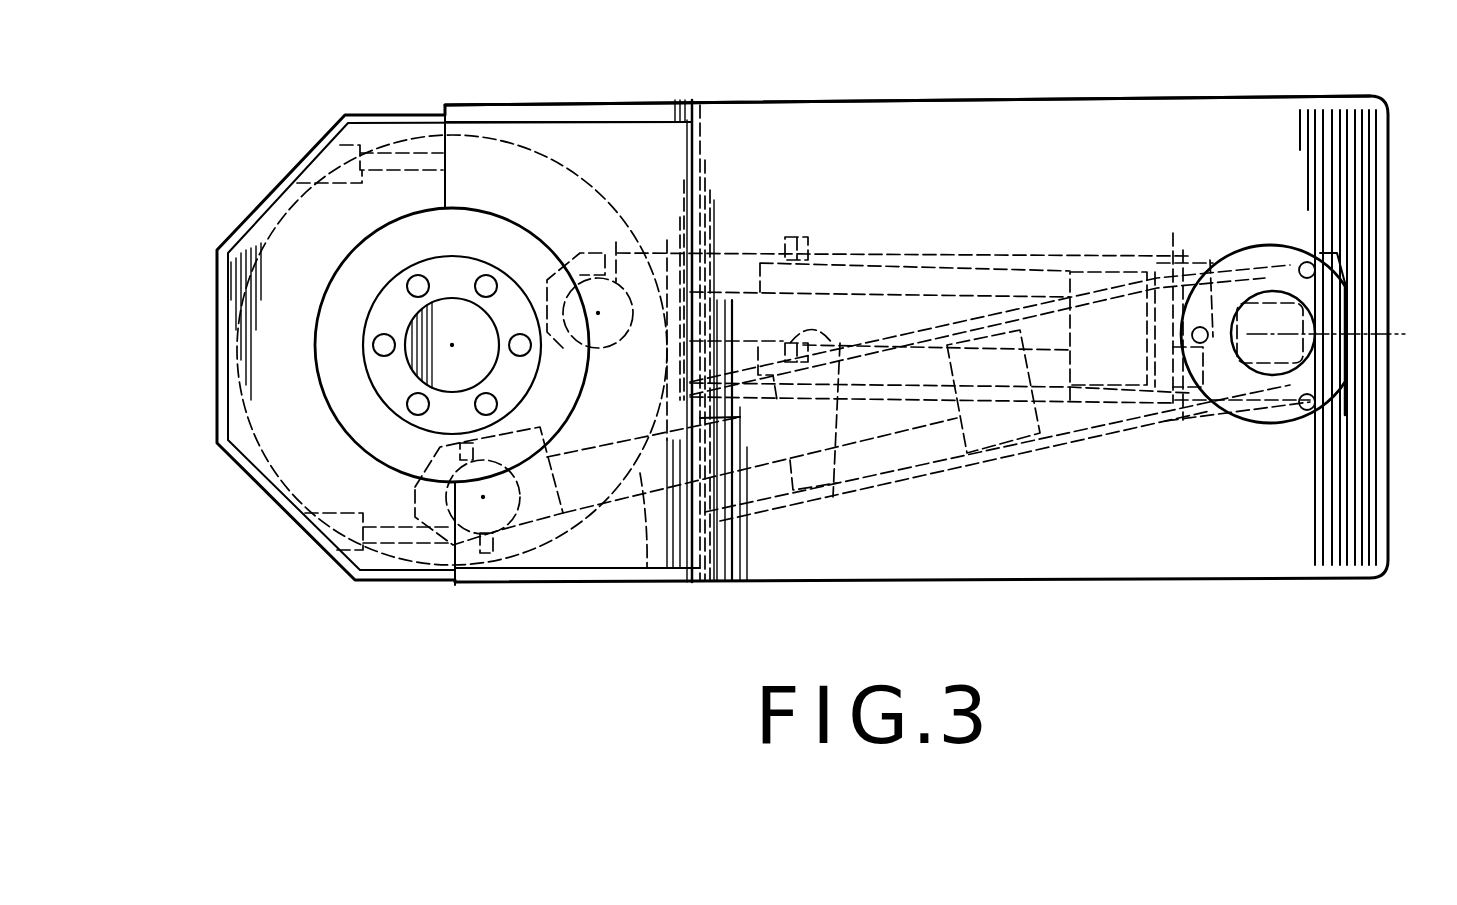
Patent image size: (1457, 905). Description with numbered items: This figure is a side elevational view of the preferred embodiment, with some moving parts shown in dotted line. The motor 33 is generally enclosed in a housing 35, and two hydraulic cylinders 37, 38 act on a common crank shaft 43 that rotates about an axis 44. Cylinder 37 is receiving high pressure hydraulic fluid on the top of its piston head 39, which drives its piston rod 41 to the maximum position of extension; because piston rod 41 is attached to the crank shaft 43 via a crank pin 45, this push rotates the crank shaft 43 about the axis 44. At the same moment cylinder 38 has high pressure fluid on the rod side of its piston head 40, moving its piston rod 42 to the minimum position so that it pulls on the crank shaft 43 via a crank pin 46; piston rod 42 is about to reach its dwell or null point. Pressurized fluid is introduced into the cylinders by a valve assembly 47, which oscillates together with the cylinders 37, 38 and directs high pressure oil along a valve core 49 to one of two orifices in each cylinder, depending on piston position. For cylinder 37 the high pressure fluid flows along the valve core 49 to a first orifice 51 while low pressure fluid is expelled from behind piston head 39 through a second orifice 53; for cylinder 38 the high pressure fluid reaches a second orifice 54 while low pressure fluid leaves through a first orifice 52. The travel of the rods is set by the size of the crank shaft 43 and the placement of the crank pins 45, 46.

The motor 33 is at (262, 108).
The housing 35 is at (555, 107).
The cylinder 37 is at (1102, 440).
The cylinder 38 is at (1030, 255).
The piston head 39 is at (1020, 460).
The piston head 40 is at (1110, 268).
The piston rod 41 is at (647, 567).
The piston rod 42 is at (880, 250).
The crank shaft 43 is at (423, 193).
The axis 44 is at (412, 333).
The crank pin 45 is at (528, 566).
The crank pin 46 is at (622, 238).
The valve assembly 47 is at (1268, 252).
The valve core 49 is at (1350, 334).
The first orifice 51 is at (1210, 425).
The first orifice 52 is at (1175, 256).
The second orifice 53 is at (838, 491).
The second orifice 54 is at (800, 235).